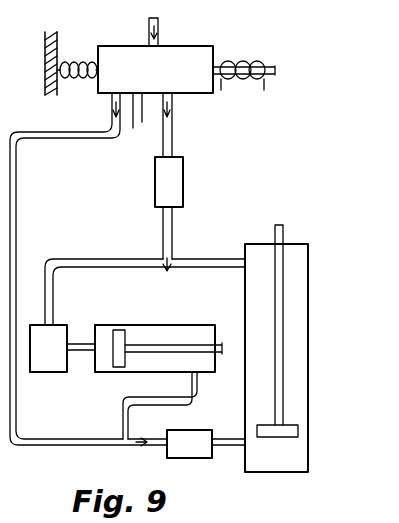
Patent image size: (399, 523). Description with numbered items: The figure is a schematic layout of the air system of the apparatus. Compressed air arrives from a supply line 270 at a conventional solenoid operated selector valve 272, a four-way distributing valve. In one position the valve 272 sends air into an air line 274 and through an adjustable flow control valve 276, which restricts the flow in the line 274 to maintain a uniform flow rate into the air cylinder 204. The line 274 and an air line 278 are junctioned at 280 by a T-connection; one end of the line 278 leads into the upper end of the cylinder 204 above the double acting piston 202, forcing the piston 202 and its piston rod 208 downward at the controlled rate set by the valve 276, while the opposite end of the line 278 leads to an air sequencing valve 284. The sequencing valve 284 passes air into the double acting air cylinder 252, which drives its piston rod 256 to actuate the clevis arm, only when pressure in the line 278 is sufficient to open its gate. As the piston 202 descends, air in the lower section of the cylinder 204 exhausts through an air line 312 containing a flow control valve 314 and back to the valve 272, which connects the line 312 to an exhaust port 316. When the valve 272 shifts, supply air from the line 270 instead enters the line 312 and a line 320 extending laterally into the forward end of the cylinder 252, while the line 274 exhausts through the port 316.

The double acting piston 202 is at (272, 430).
The air cylinder 204 is at (247, 383).
The piston rod 208 is at (284, 232).
The double acting air cylinder 252 is at (142, 325).
The piston rod 256 is at (197, 347).
The supply line 270 is at (160, 24).
The solenoid operated selector valve 272 is at (199, 57).
The air line 274 is at (173, 134).
The adjustable flow control valve 276 is at (183, 182).
The air line 278 is at (75, 247).
The junction 280 is at (166, 272).
The air sequencing valve 284 is at (56, 367).
The air line 312 is at (17, 166).
The flow control valve 314 is at (200, 459).
The exhaust port 316 is at (139, 128).
The line 320 is at (145, 398).